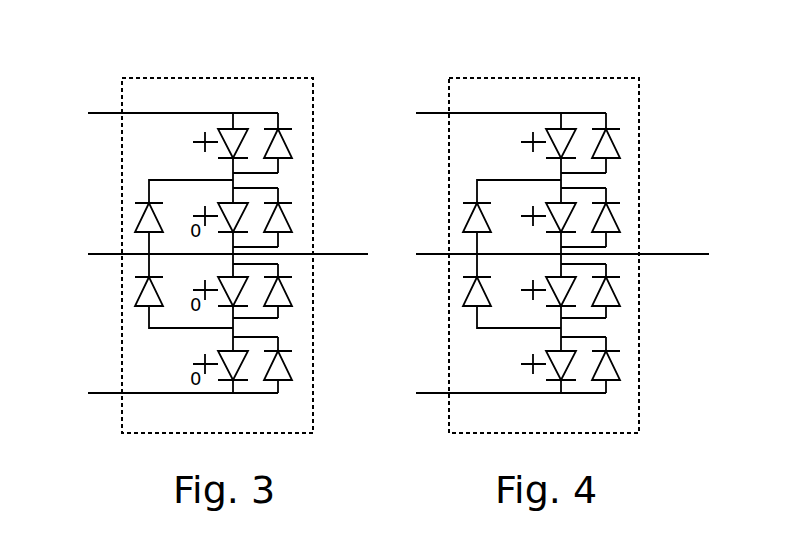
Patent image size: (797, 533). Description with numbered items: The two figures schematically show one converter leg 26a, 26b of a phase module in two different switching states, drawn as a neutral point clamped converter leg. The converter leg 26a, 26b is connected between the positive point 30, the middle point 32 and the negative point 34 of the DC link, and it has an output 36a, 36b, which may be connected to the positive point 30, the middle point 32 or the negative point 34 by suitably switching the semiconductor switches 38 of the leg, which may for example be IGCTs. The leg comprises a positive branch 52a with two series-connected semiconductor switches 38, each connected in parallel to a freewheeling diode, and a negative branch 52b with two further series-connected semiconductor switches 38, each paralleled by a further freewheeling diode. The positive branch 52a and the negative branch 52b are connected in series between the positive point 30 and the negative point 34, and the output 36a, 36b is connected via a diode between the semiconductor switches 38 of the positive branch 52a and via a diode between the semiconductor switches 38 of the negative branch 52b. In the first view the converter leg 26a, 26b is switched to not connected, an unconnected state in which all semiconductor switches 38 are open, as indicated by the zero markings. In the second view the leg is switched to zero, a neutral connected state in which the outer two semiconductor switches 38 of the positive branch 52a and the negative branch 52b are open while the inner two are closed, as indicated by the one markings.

In FIG. 3, the converter leg 26a is at (242, 225).
In FIG. 4, the converter leg 26a is at (569, 225).
In FIG. 3, the converter leg 26b is at (258, 78).
In FIG. 4, the converter leg 26b is at (586, 78).
In FIG. 3, the positive point 30 is at (105, 113).
In FIG. 4, the positive point 30 is at (433, 113).
In FIG. 3, the middle point 32 is at (105, 254).
In FIG. 4, the middle point 32 is at (442, 253).
In FIG. 3, the negative point 34 is at (105, 393).
In FIG. 4, the negative point 34 is at (433, 393).
In FIG. 3, the output 36a is at (347, 223).
In FIG. 4, the output 36a is at (698, 223).
In FIG. 3, the output 36b is at (380, 215).
In FIG. 4, the output 36b is at (693, 251).
In FIG. 3, the semiconductor switch 38 is at (222, 127).
In FIG. 4, the semiconductor switch 38 is at (550, 127).
In FIG. 4, the positive branch 52a is at (616, 131).
In FIG. 4, the negative branch 52b is at (694, 374).